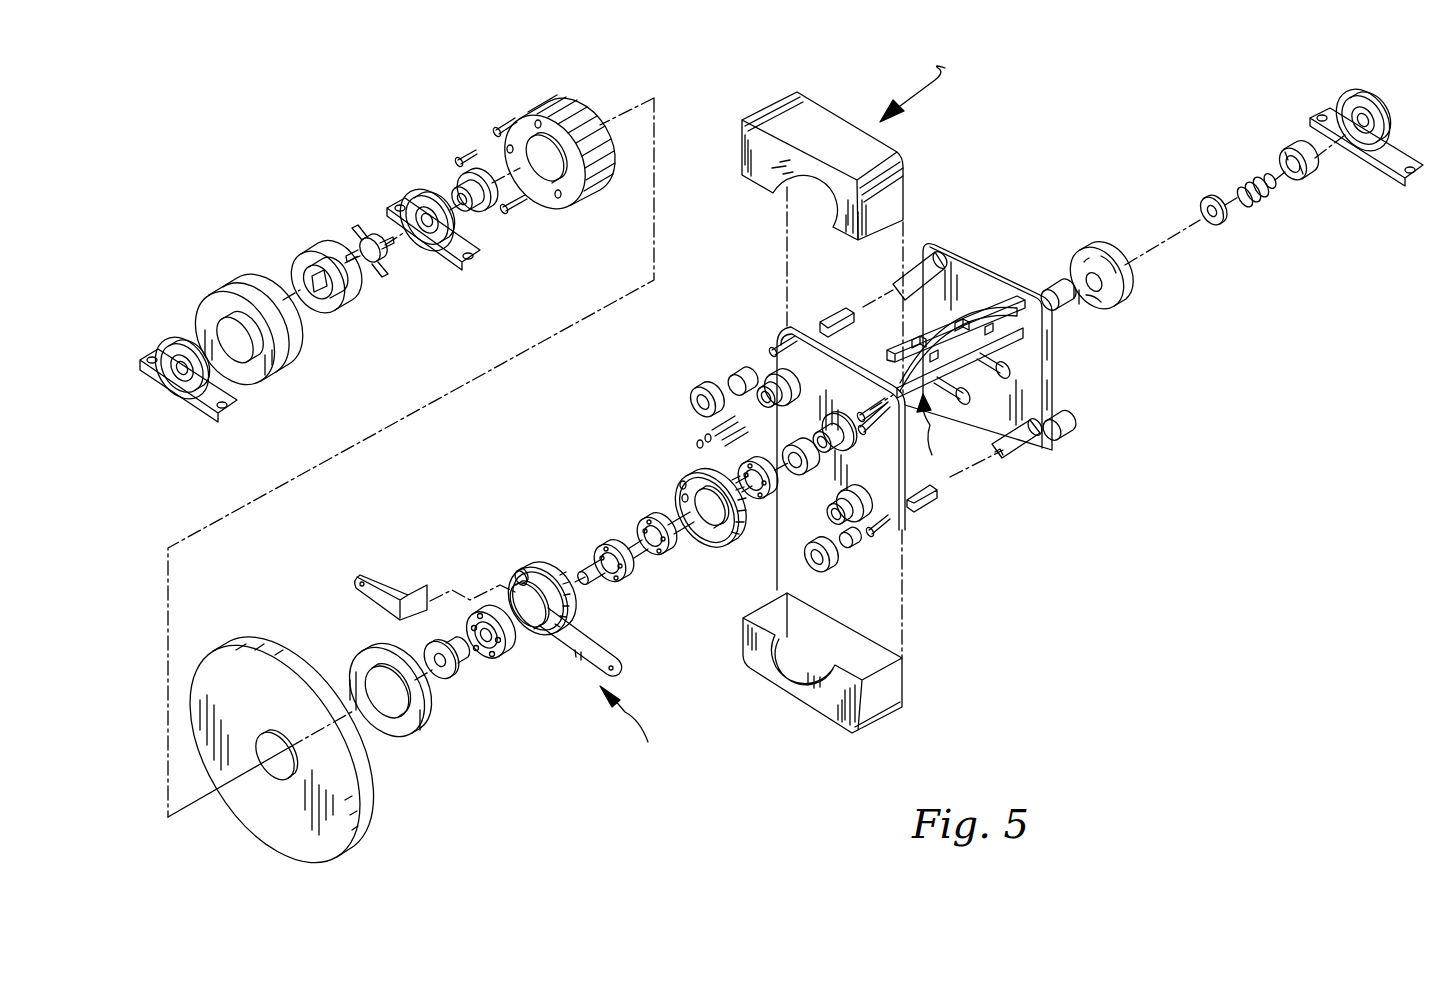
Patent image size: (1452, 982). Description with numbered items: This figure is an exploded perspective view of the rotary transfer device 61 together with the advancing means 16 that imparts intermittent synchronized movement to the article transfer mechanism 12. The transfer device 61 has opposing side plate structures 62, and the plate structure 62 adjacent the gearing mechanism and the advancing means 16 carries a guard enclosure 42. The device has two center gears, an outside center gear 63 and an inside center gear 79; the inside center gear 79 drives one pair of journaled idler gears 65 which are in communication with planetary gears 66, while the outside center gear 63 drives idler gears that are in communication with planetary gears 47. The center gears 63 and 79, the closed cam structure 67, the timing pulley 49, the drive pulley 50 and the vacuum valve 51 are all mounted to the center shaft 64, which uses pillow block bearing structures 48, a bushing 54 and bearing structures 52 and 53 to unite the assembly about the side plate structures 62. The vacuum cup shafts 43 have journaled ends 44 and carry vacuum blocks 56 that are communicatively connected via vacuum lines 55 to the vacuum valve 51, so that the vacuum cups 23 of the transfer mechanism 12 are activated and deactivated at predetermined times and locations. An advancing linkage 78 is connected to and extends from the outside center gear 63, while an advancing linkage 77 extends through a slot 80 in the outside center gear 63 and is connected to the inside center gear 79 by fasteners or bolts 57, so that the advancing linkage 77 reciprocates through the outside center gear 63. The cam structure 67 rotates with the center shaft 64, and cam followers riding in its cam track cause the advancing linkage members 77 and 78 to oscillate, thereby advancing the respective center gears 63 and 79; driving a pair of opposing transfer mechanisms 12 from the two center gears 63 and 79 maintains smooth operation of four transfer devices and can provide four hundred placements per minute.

The article transfer mechanism 12 is at (960, 400).
The advancing means 16 is at (632, 723).
The vacuum cup 23 is at (962, 388).
The guard enclosure 42 is at (908, 188).
The vacuum cup shafts 43 is at (832, 318).
The journaled ends 44 is at (1064, 424).
The planetary gears 47 is at (800, 478).
The pillow block bearing structures 48 is at (143, 355).
The timing pulley 49 is at (238, 258).
The drive pulley 50 is at (503, 120).
The vacuum valve 51 is at (1110, 252).
The bearing structure 52 is at (608, 540).
The bearing structure 53 is at (505, 655).
The bushing 54 is at (308, 252).
The vacuum lines 55 is at (1000, 310).
The vacuum blocks 56 is at (897, 357).
The fasteners or bolts 57 is at (705, 430).
The transfer device 61 is at (925, 87).
The side plate structures 62 is at (1035, 365).
The outside center gear 63 is at (548, 562).
The center shaft 64 is at (690, 548).
The journaled idler gears 65 is at (768, 368).
The planetary gears 66 is at (698, 405).
The cam structure 67 is at (275, 754).
The advancing linkage 77 is at (355, 583).
The advancing linkage 78 is at (580, 662).
The inside center gear 79 is at (680, 482).
The slot 80 is at (512, 578).